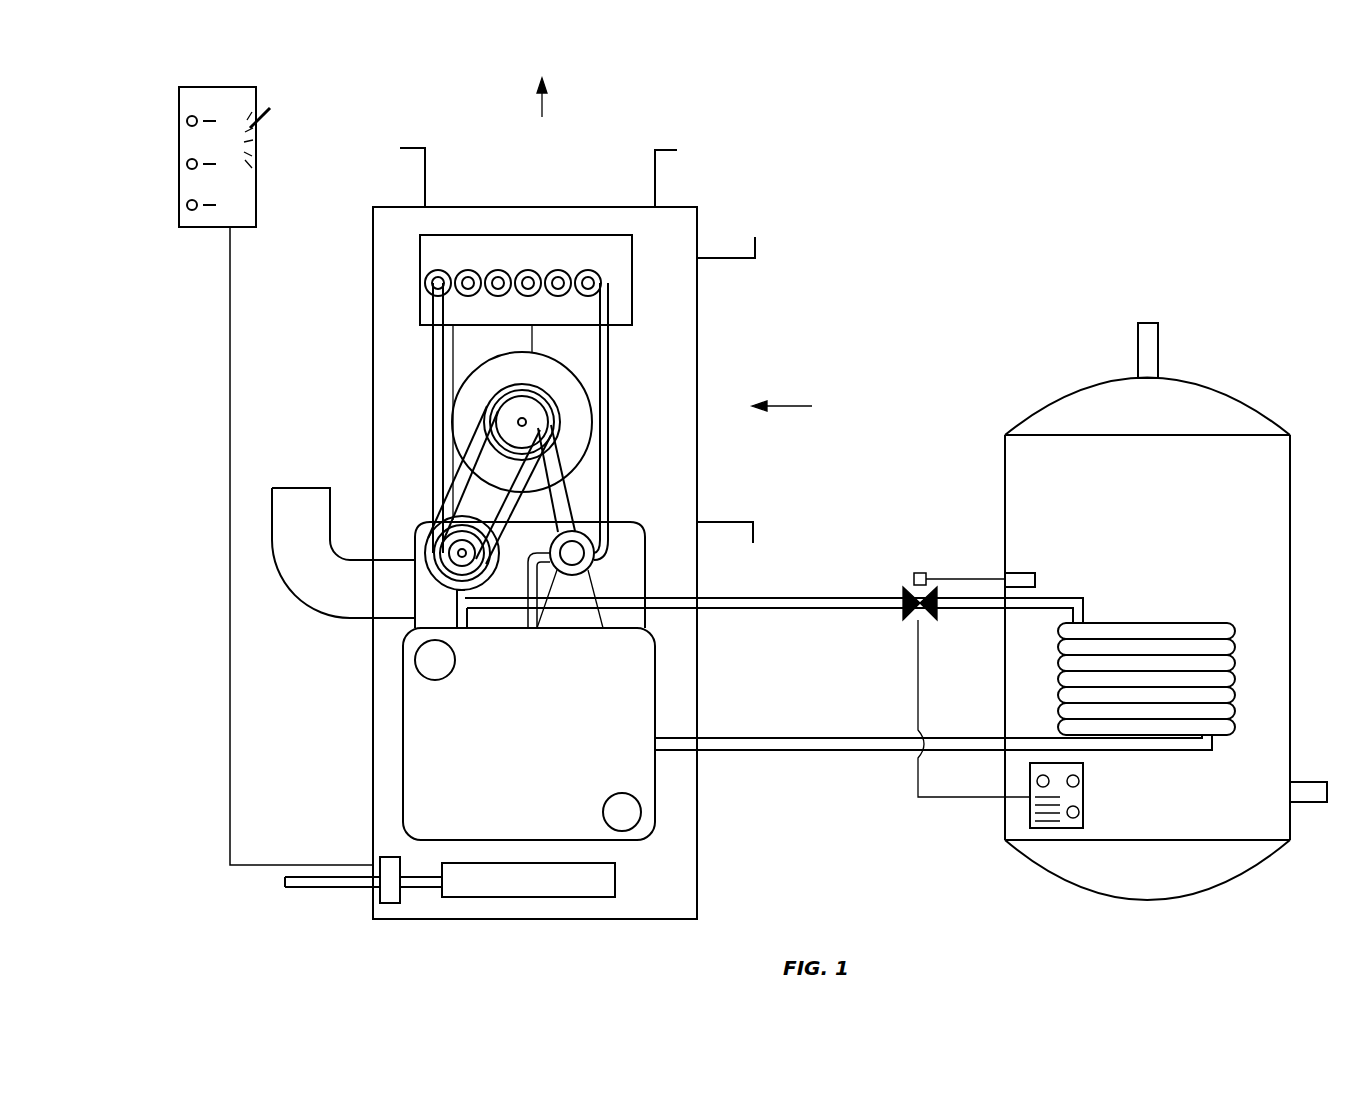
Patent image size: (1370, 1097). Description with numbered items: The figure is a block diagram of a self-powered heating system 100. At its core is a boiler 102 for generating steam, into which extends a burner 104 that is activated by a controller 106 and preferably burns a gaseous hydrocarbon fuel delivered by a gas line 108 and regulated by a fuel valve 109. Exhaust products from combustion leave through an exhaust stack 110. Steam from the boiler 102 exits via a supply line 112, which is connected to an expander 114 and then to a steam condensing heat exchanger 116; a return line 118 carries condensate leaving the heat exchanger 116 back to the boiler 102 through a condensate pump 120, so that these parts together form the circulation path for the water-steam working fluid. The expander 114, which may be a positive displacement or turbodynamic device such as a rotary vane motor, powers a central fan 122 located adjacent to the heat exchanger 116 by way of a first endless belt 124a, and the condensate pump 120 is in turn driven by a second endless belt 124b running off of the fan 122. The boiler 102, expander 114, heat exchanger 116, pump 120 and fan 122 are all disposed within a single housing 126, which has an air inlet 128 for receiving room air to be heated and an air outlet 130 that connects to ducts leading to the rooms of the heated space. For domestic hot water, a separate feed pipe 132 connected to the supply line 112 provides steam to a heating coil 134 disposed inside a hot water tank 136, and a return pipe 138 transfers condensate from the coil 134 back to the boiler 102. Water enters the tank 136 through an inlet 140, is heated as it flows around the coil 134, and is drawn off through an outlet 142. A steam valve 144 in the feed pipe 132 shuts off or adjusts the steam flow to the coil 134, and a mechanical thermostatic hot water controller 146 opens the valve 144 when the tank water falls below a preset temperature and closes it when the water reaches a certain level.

The self-powered heating system 100 is at (932, 255).
The boiler 102 is at (403, 760).
The burner 104 is at (530, 900).
The controller 106 is at (205, 230).
The gas line 108 is at (297, 882).
The fuel valve 109 is at (376, 886).
The exhaust stack 110 is at (313, 612).
The supply line 112 is at (433, 365).
The expander 114 is at (450, 520).
The steam condensing heat exchanger 116 is at (426, 274).
The return line 118 is at (610, 415).
The condensate pump 120 is at (596, 553).
The fan 122 is at (595, 380).
The first endless belt 124a is at (470, 440).
The second endless belt 124b is at (585, 492).
The housing 126 is at (700, 222).
The air inlet 128 is at (755, 530).
The air outlet 130 is at (425, 140).
The feed pipe 132 is at (862, 610).
The heating coil 134 is at (1235, 633).
The hot water tank 136 is at (1290, 500).
The return pipe 138 is at (773, 752).
The inlet 140 is at (1330, 800).
The outlet 142 is at (1150, 323).
The steam valve 144 is at (920, 573).
The hot water controller 146 is at (1028, 810).